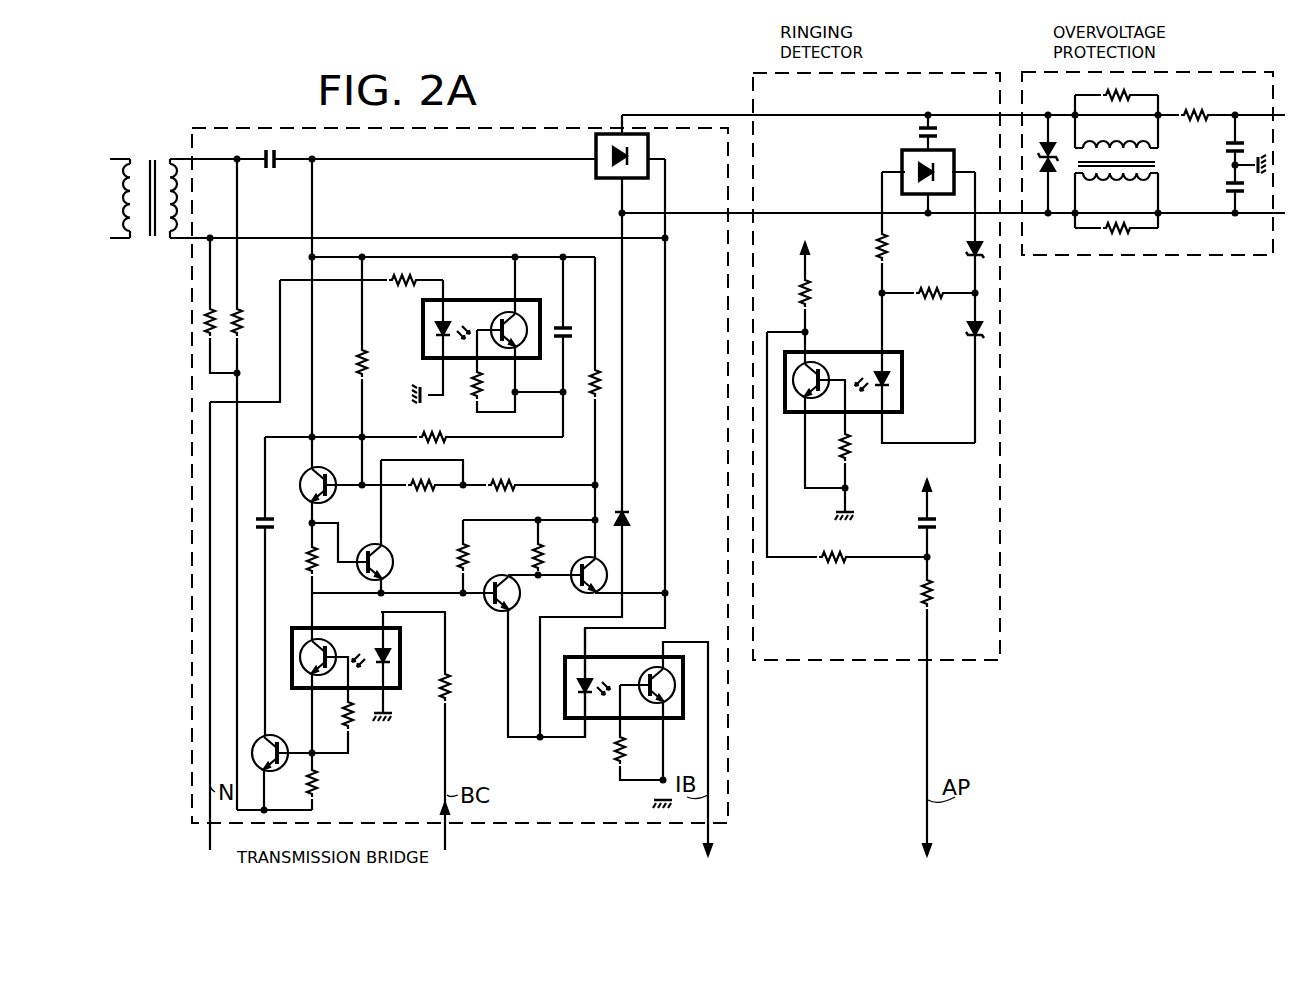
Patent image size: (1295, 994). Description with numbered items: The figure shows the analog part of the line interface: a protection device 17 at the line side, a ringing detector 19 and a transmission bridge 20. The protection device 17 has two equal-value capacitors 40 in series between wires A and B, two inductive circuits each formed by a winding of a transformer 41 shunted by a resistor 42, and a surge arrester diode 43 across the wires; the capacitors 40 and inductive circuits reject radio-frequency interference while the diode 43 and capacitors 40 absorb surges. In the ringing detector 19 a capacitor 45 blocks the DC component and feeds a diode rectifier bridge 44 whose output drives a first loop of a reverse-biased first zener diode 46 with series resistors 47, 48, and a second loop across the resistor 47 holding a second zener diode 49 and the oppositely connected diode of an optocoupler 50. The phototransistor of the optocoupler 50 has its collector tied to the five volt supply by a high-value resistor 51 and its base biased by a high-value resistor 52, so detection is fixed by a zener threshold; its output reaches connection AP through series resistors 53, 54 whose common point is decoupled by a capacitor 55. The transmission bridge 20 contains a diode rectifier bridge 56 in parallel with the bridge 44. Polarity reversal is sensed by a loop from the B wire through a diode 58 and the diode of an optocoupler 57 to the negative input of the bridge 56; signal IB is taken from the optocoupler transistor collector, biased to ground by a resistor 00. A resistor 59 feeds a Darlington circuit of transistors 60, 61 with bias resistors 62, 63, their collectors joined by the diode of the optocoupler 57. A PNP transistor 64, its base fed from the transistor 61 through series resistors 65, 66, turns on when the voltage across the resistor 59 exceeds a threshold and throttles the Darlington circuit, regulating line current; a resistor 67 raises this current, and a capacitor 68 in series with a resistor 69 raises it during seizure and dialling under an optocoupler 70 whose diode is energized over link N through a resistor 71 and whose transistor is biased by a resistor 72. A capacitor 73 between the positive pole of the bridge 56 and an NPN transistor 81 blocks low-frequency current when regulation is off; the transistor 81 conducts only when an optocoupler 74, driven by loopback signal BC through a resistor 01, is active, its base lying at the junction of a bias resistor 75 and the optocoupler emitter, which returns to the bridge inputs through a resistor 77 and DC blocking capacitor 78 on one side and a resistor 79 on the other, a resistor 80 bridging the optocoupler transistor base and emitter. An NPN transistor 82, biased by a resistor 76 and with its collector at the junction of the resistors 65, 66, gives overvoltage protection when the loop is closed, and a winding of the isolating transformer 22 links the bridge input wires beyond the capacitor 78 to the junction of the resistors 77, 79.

The protection device 17 is at (1100, 248).
The ringing detector 19 is at (1000, 573).
The transmission bridge 20 is at (200, 445).
The isolating transformer 22 is at (154, 158).
The capacitors 40 is at (1227, 150).
The transformer 41 is at (1160, 160).
The resistor 42 is at (1117, 96).
The surge arrester diode 43 is at (1044, 164).
The diode rectifier bridge 44 is at (904, 159).
The capacitor 45 is at (922, 126).
The first zener diode 46 is at (966, 250).
The resistor 47 is at (934, 300).
The resistor 48 is at (880, 251).
The zener diode 49 is at (966, 334).
The optocoupler 50 is at (846, 362).
The high-value resistor 51 is at (800, 296).
The high-value resistor 52 is at (854, 454).
The resistor 53 is at (828, 562).
The resistor 54 is at (936, 596).
The capacitor 55 is at (936, 526).
The diode rectifier bridge 56 is at (596, 172).
The optocoupler 57 is at (672, 718).
The second diode 58 is at (626, 511).
The resistor 59 is at (600, 381).
The transistor 60 is at (494, 610).
The transistor 61 is at (577, 593).
The resistor 62 is at (470, 559).
The resistor 63 is at (545, 554).
The PNP transistor 64 is at (323, 468).
The resistor 65 is at (418, 492).
The resistor 66 is at (505, 456).
The resistor 67 is at (380, 358).
The capacitor 68 is at (576, 326).
The resistor 69 is at (430, 430).
The optocoupler 70 is at (488, 274).
The resistor 71 is at (403, 288).
The resistor 72 is at (472, 388).
The capacitor 73 is at (272, 522).
The optocoupler 74 is at (357, 640).
The bias resistor 75 is at (316, 777).
The resistor 76 is at (308, 562).
The resistor 77 is at (242, 322).
The capacitor 78 is at (268, 168).
The resistor 79 is at (208, 323).
The bias resistor 80 is at (352, 724).
The NPN transistor 81 is at (292, 722).
The NPN transistor 82 is at (378, 546).
The resistor 00 is at (613, 751).
The resistor 01 is at (454, 690).